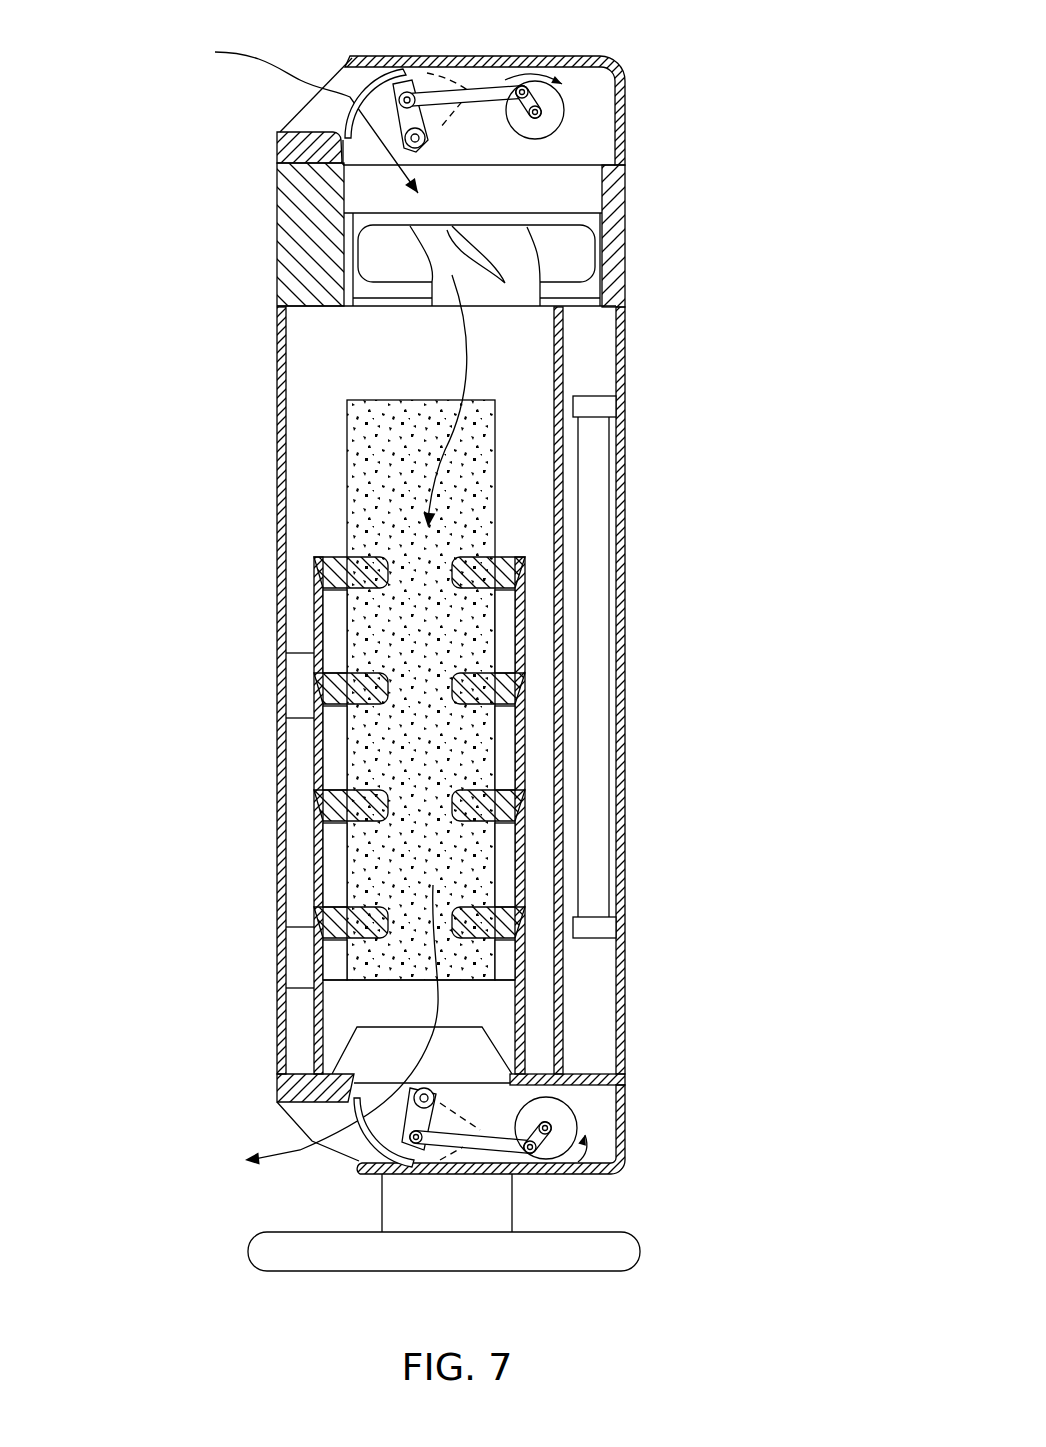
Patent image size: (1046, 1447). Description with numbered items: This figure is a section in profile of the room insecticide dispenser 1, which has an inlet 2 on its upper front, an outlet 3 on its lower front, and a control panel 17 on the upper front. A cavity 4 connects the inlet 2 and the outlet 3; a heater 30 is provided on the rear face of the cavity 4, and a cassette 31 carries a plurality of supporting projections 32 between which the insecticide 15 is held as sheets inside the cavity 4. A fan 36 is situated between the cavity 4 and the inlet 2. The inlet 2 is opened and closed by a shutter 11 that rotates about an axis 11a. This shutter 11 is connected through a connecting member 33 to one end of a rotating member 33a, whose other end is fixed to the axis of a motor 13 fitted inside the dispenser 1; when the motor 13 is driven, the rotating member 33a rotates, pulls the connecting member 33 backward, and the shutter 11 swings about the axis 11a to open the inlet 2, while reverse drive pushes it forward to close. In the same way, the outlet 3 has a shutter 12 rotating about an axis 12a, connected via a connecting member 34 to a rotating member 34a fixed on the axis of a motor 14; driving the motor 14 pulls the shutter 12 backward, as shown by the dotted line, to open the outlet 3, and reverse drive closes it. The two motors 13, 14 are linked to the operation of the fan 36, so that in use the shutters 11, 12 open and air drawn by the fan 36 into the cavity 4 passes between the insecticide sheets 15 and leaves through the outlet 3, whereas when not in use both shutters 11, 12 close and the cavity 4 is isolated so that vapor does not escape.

The room insecticide dispenser 1 is at (643, 338).
The inlet 2 is at (312, 117).
The outlet 3 is at (315, 1117).
The cavity 4 is at (326, 366).
The shutter 11 is at (358, 95).
The axis 11a is at (430, 136).
The shutter 12 is at (352, 1150).
The axis 12a is at (432, 1095).
The motor 13 is at (537, 76).
The motor 14 is at (583, 1127).
The insecticide 15 is at (347, 437).
The control panel 17 is at (297, 217).
The heater 30 is at (593, 528).
The cassette 31 is at (312, 744).
The supporting projections 32 is at (343, 577).
The connecting member 33 is at (488, 97).
The rotating member 33a is at (545, 99).
The connecting member 34 is at (517, 1158).
The rotating member 34a is at (552, 1127).
The fan 36 is at (530, 270).